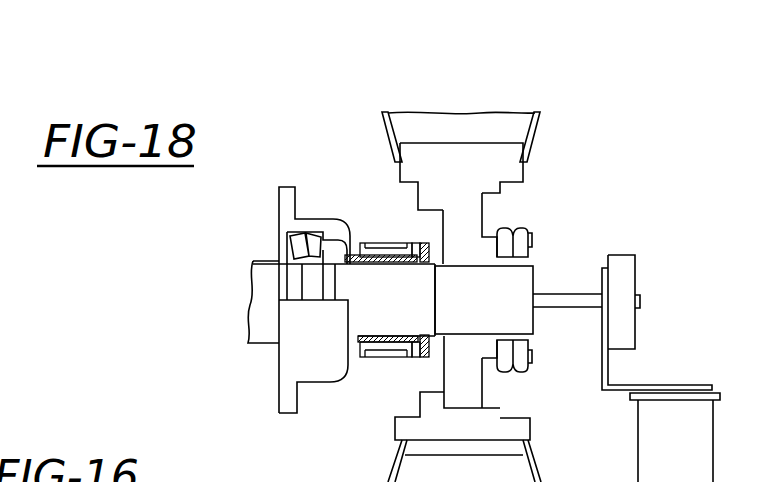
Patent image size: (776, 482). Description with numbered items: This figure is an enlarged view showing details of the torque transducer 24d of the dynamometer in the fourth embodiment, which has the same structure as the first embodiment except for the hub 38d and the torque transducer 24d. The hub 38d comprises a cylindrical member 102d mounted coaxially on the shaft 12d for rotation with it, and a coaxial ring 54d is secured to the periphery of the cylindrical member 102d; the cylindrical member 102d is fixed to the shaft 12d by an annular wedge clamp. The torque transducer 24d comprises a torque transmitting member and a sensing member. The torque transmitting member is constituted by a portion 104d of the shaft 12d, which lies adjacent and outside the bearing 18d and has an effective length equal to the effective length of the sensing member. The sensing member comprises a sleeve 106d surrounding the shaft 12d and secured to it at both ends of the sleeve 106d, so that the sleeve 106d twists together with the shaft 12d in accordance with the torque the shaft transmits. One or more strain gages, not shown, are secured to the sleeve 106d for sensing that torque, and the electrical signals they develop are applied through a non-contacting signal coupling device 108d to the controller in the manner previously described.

The shaft 12d is at (494, 309).
The bearing 18d is at (274, 233).
The torque transducer 24d is at (398, 230).
The hub 38d is at (558, 232).
The coaxial ring 54d is at (523, 168).
The cylindrical member 102d is at (484, 212).
The portion of the shaft 104d is at (530, 243).
The sleeve 106d is at (383, 263).
The non-contacting signal coupling device 108d is at (427, 234).